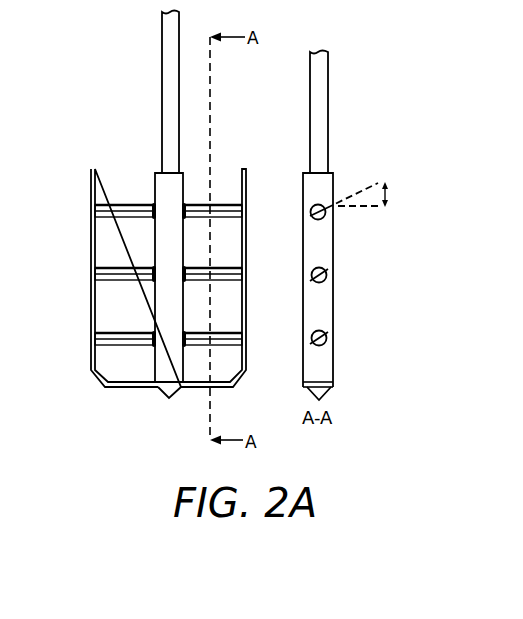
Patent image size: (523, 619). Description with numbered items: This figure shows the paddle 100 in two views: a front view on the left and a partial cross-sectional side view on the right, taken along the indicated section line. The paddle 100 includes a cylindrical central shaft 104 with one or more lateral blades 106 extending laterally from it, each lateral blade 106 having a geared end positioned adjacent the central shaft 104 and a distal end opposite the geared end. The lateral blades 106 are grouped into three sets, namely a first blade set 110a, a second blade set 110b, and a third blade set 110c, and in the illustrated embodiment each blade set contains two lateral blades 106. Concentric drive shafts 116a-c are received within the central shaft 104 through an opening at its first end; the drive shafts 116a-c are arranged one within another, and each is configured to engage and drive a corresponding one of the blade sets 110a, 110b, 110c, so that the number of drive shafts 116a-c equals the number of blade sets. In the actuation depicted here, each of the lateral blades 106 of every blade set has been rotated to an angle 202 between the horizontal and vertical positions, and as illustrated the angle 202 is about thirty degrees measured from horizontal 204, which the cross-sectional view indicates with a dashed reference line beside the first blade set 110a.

The paddle 100 is at (60, 180).
The central shaft 104 is at (155, 180).
The lateral blade 106 is at (143, 207).
The first blade set 110a is at (330, 197).
The second blade set 110b is at (327, 282).
The third blade set 110c is at (327, 345).
The drive shafts 116a-c is at (150, 111).
The angle 202 is at (388, 196).
The horizontal 204 is at (350, 208).